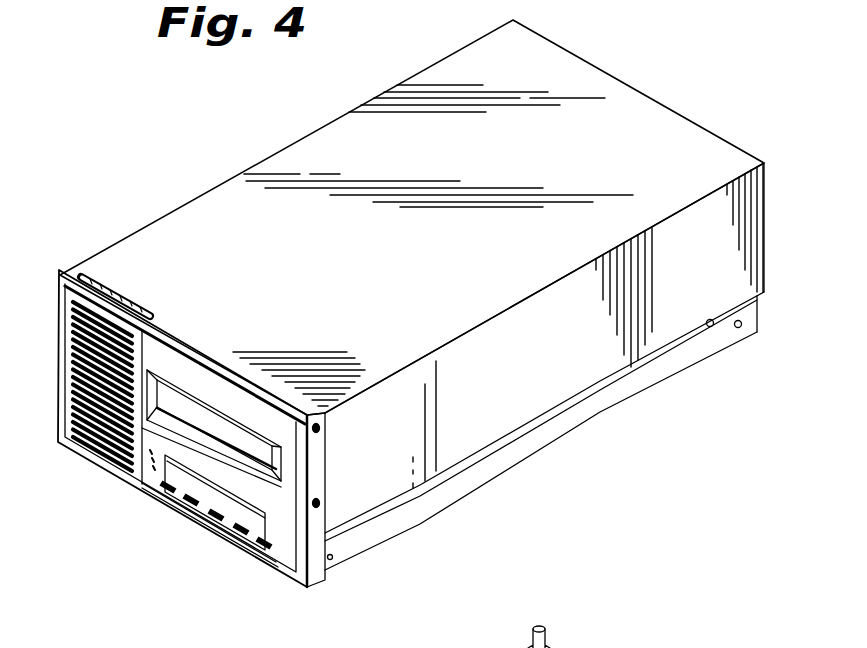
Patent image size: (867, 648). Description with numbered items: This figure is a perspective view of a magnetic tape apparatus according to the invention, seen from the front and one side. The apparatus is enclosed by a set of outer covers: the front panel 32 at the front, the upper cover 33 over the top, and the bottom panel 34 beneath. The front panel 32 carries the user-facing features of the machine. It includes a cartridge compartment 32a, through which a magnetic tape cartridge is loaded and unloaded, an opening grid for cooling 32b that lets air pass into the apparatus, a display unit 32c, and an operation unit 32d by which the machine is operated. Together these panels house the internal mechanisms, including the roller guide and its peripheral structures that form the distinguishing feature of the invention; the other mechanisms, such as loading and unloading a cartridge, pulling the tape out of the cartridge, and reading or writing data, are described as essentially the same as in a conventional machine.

The front panel 32 is at (155, 472).
The cartridge compartment 32a is at (272, 457).
The opening grid for cooling 32b is at (97, 440).
The display unit 32c is at (263, 519).
The operation unit 32d is at (268, 541).
The upper cover 33 is at (172, 230).
The bottom panel 34 is at (427, 519).